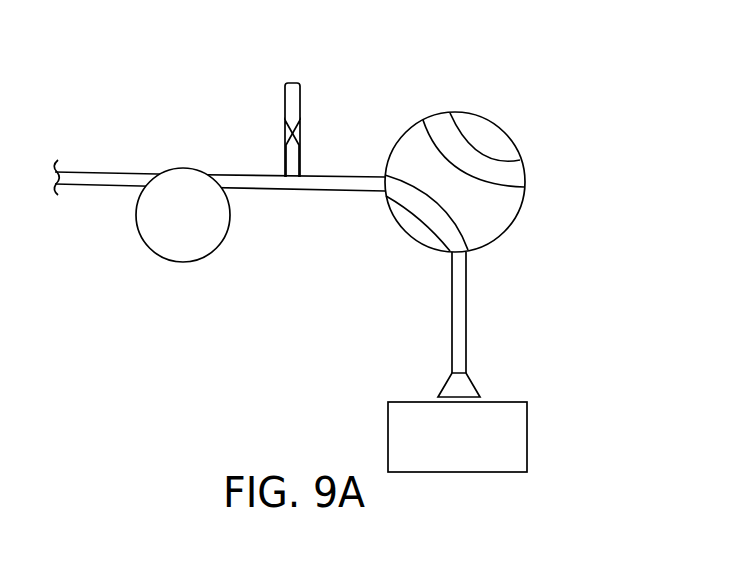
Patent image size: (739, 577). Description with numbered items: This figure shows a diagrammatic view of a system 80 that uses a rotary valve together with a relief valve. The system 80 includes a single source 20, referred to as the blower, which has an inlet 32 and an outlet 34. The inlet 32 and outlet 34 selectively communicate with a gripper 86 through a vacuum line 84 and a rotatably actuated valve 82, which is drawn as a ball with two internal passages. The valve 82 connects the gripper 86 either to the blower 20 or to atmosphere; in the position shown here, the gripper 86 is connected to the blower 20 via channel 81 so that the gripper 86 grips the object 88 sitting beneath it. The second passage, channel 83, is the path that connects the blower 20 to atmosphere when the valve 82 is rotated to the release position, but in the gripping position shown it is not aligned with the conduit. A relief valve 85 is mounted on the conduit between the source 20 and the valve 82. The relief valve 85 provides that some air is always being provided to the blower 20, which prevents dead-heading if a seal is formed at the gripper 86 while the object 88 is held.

The source 20 is at (183, 264).
The inlet 32 is at (268, 193).
The outlet 34 is at (112, 168).
The system 80 is at (458, 148).
The channel 81 is at (433, 228).
The rotatably actuated valve 82 is at (403, 130).
The channel 83 is at (485, 152).
The vacuum line 84 is at (467, 302).
The relief valve 85 is at (276, 135).
The gripper 86 is at (467, 378).
The object 88 is at (528, 432).